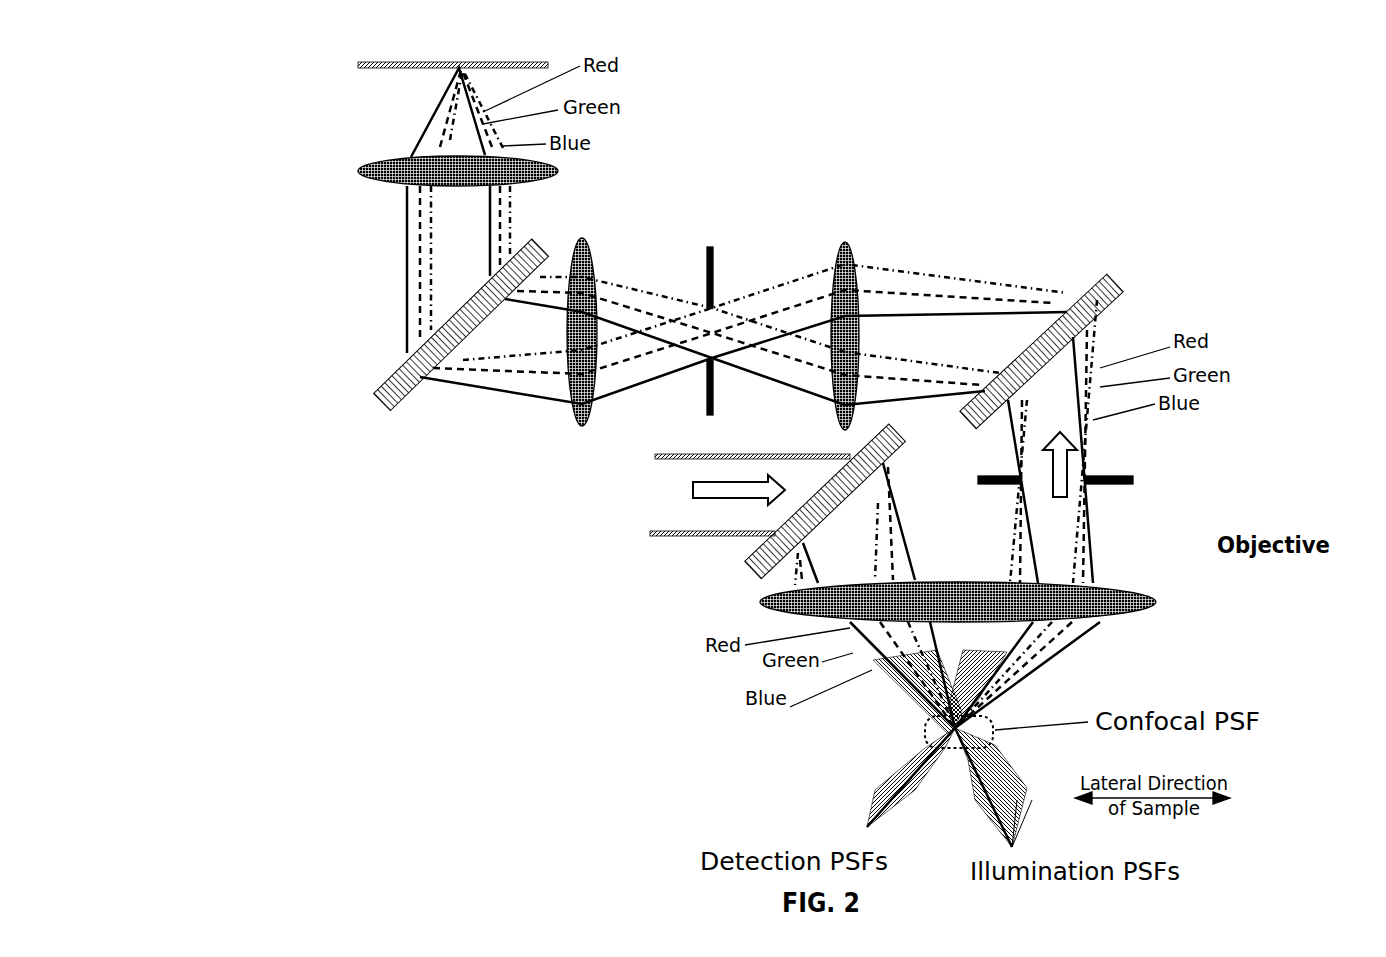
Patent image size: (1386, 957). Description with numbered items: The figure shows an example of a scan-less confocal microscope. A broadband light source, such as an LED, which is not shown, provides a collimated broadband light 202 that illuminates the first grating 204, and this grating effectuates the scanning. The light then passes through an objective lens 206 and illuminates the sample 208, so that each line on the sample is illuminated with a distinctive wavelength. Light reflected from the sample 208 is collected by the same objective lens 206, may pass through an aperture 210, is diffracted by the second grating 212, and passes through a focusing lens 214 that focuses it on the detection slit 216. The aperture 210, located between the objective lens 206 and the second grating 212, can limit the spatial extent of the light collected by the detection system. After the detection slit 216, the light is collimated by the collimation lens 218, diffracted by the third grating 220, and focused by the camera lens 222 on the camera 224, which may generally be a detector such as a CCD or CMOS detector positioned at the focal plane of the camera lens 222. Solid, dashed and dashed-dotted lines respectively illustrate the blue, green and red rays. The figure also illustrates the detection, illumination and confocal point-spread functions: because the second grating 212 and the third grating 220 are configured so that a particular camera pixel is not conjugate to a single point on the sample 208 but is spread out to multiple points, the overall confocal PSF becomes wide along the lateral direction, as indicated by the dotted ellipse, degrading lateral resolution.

The collimated broadband light 202 is at (744, 495).
The grating 1 204 is at (748, 568).
The objective lens 206 is at (1140, 595).
The sample 208 is at (853, 730).
The aperture 210 is at (1135, 480).
The grating 2 212 is at (1120, 277).
The focusing lens 214 is at (845, 245).
The detection slit 216 is at (710, 227).
The collimation lens 218 is at (572, 408).
The grating 3 220 is at (383, 395).
The camera lens 222 is at (372, 165).
The camera 224 is at (366, 65).